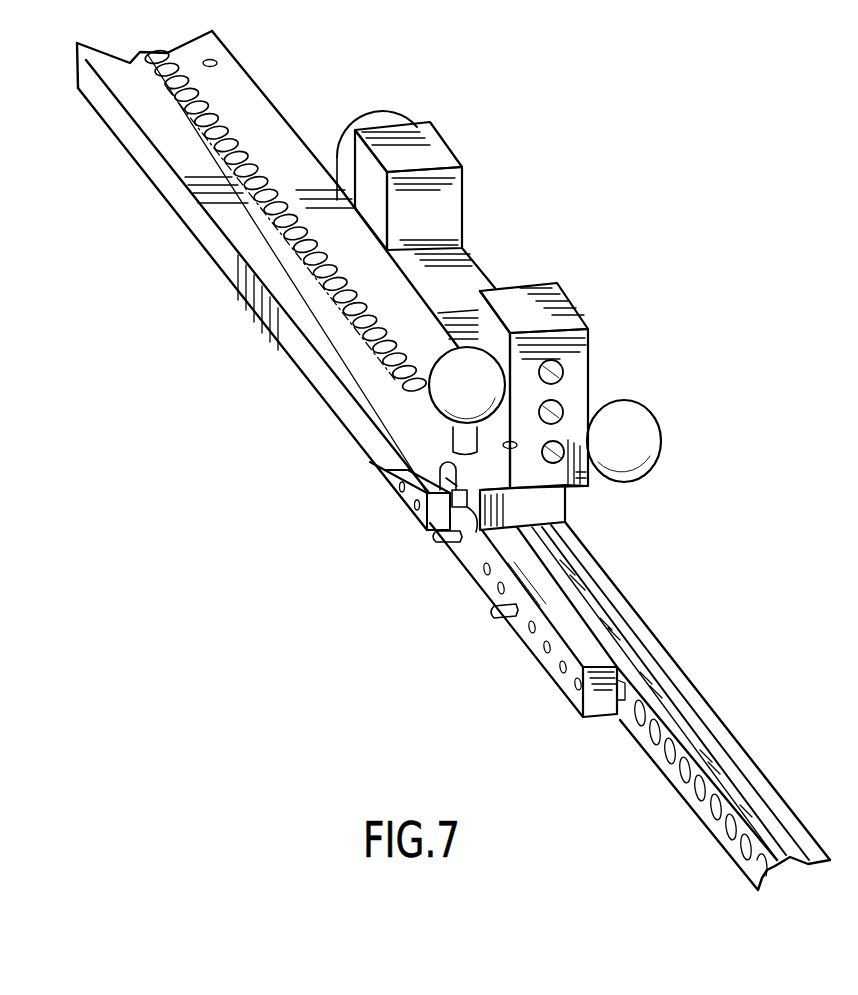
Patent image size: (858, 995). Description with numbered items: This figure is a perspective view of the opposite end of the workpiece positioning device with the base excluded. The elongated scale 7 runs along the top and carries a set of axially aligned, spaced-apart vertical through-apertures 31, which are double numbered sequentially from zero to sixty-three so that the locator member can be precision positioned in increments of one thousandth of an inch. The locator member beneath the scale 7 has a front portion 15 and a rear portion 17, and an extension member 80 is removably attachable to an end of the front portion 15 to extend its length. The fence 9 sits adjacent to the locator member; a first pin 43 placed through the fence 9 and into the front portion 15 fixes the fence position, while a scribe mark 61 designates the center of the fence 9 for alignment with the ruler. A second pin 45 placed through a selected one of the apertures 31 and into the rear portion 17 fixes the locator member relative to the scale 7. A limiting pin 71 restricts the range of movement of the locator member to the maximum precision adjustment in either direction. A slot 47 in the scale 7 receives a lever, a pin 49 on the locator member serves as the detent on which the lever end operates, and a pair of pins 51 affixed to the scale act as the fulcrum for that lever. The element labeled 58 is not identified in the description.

The elongated scale 7 is at (273, 147).
The vertical through-apertures 31 is at (214, 110).
The fence 9 is at (458, 262).
The scribe mark 61 is at (453, 312).
The holes in upright block 58 is at (551, 372).
The second pin 45 is at (450, 380).
The first pin 43 is at (640, 444).
The slot 47 is at (452, 506).
The pin 49 is at (450, 538).
The pair of pins 51 is at (458, 465).
The limiting pin 71 is at (510, 615).
The front portion 15 is at (590, 564).
The rear portion 17 is at (591, 648).
The extension member 80 is at (717, 728).